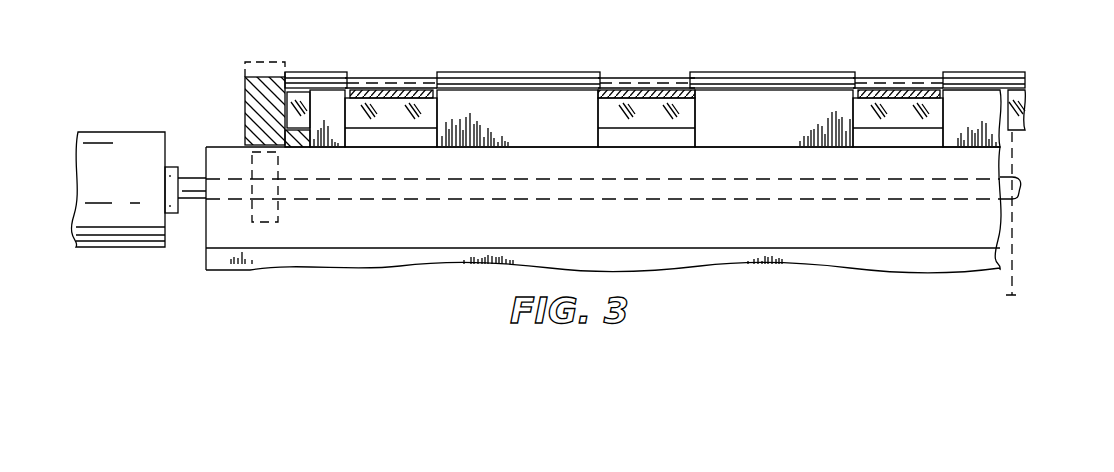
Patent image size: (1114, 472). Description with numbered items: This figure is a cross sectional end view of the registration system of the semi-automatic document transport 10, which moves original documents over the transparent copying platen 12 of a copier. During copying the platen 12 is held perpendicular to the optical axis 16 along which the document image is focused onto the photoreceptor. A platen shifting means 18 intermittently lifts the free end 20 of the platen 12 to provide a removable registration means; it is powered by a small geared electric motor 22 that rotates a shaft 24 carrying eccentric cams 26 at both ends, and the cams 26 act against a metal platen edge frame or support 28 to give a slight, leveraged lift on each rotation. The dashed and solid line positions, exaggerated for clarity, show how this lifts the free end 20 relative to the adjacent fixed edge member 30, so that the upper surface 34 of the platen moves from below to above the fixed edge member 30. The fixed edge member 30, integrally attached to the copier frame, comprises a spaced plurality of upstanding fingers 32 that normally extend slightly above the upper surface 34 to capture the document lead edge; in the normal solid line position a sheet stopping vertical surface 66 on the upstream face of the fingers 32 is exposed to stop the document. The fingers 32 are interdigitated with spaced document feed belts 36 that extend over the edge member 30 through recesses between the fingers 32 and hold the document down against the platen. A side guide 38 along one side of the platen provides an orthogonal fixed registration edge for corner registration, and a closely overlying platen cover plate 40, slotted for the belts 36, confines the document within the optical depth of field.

The semi-automatic document transport 10 is at (736, 57).
The transparent copying window or platen 12 is at (662, 120).
The optical axis 16 is at (1013, 252).
The platen shifting means 18 is at (184, 127).
The free end of the platen 20 is at (405, 120).
The geared electric motor 22 is at (113, 143).
The shaft 24 is at (196, 194).
The eccentric cams 26 is at (282, 212).
The platen edge frame or support 28 is at (245, 89).
The fixed edge member 30 is at (815, 98).
The upstanding fingers 32 is at (480, 100).
The upper surface of the platen 34 is at (1026, 92).
The document feed belts 36 is at (407, 90).
The side guide 38 is at (297, 72).
The platen cover plate 40 is at (526, 72).
The sheet stopping vertical surface 66 is at (578, 90).